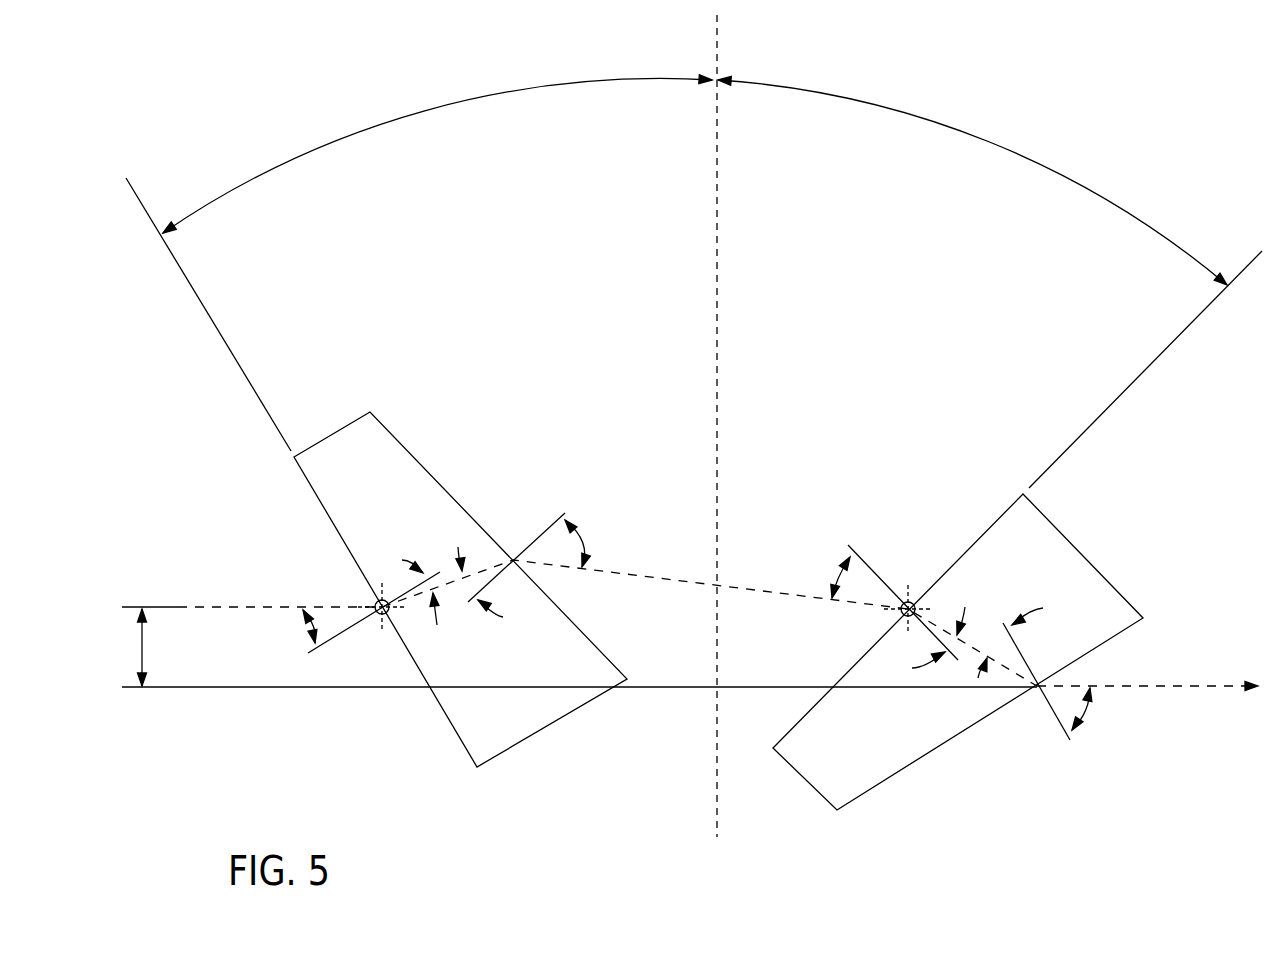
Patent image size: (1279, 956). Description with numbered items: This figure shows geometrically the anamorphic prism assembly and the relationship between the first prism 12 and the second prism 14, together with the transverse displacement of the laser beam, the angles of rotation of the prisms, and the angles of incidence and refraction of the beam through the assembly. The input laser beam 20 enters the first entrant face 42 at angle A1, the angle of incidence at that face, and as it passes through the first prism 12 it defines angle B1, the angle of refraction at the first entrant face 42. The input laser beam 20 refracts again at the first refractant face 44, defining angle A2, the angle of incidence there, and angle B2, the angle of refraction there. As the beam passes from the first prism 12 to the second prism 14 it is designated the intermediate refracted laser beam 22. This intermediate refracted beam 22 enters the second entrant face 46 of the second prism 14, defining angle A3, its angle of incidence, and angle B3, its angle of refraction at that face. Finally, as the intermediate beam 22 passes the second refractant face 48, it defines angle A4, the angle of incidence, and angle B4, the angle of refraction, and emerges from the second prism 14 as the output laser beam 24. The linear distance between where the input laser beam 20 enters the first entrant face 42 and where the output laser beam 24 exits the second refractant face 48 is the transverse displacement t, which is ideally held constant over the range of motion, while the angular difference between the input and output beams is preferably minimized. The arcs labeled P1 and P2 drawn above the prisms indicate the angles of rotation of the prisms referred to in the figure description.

The first prism 12 is at (448, 725).
The second prism 14 is at (1080, 552).
The input laser beam 20 is at (232, 605).
The intermediate refracted laser beam 22 is at (747, 588).
The output laser beam 24 is at (1175, 688).
The first entrant face 42 is at (375, 532).
The first refractant face 44 is at (454, 532).
The second entrant face 46 is at (984, 588).
The second refractant face 48 is at (918, 750).
The angle of incidence at first entrant face A1 is at (294, 629).
The angle of incidence at first refractant face A2 is at (507, 615).
The angle of incidence at second entrant face A3 is at (826, 576).
The angle of incidence at second refractant face A4 is at (1043, 611).
The angle of refraction at first entrant face B1 is at (417, 586).
The angle of refraction at first refractant face B2 is at (590, 543).
The angle of refraction at second entrant face B3 is at (936, 644).
The angle of refraction at second refractant face B4 is at (1098, 711).
The pivot angle P1 is at (437, 154).
The pivot angle P2 is at (972, 180).
The transverse displacement t is at (150, 647).